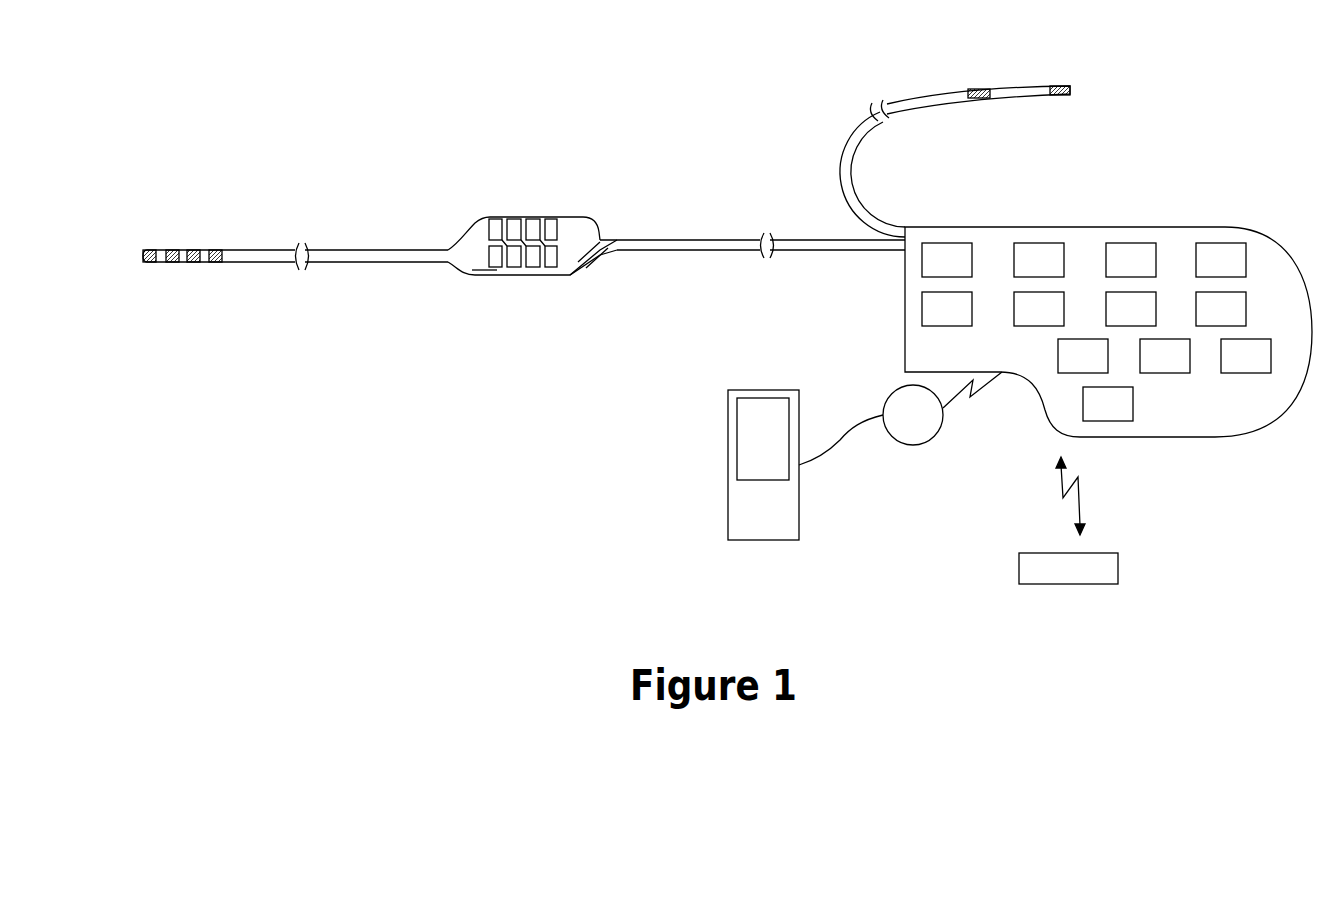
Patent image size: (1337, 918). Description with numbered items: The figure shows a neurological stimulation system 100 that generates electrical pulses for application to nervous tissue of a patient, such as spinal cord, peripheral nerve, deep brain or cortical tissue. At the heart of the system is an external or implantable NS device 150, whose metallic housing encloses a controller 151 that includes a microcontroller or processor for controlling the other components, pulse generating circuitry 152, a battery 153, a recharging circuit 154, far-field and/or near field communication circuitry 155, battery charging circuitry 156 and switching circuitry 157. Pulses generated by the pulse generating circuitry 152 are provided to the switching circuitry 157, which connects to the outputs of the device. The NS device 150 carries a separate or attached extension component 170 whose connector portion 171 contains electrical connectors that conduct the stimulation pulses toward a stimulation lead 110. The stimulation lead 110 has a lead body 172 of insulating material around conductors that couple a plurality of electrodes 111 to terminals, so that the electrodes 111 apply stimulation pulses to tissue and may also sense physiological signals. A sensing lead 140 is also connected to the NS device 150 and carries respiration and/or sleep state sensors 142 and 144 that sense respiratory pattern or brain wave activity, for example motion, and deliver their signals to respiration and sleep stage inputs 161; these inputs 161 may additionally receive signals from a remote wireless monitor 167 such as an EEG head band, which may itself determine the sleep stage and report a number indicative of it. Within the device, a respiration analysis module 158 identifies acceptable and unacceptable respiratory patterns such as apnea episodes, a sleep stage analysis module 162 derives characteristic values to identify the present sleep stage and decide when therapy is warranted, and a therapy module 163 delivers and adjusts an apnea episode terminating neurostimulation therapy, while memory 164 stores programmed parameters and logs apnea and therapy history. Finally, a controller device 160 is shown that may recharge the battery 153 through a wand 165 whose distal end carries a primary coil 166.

The neurological stimulation system 100 is at (572, 431).
The stimulation lead 110 is at (295, 314).
The electrodes 111 is at (184, 265).
The sensing lead 140 is at (927, 129).
The respiration and/or sleep state sensor 142 is at (980, 88).
The respiration and/or sleep state sensor 144 is at (1062, 97).
The NS device 150 is at (1108, 369).
The controller 151 is at (947, 260).
The pulse generating circuitry 152 is at (1039, 260).
The battery 153 is at (1131, 260).
The recharging circuit 154 is at (1221, 260).
The far-field and/or near field communication circuitry 155 is at (947, 309).
The battery charging circuitry 156 is at (1039, 309).
The switching circuitry 157 is at (1131, 309).
The respiration analysis module 158 is at (1221, 309).
The controller device 160 is at (728, 460).
The respiration and sleep stage inputs 161 is at (1083, 356).
The sleep stage analysis module 162 is at (1165, 356).
The therapy module 163 is at (1246, 356).
The memory 164 is at (1108, 404).
The wand 165 is at (855, 421).
The coil 166 is at (913, 445).
The remote wireless monitor 167 is at (1068, 520).
The extension component 170 is at (676, 236).
The connector portion 171 is at (533, 216).
The lead body 172 is at (800, 238).